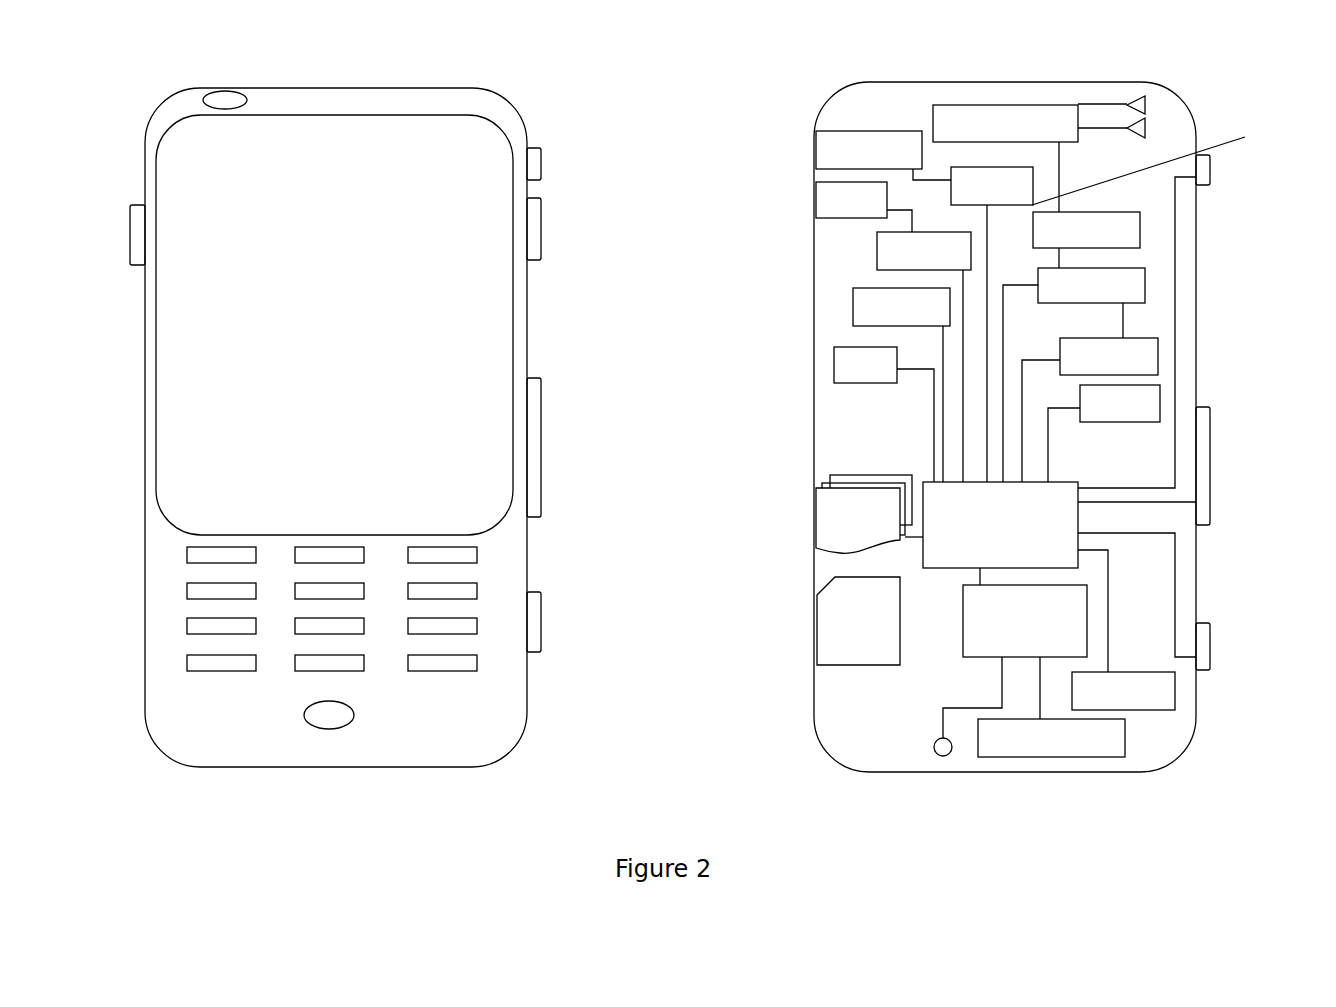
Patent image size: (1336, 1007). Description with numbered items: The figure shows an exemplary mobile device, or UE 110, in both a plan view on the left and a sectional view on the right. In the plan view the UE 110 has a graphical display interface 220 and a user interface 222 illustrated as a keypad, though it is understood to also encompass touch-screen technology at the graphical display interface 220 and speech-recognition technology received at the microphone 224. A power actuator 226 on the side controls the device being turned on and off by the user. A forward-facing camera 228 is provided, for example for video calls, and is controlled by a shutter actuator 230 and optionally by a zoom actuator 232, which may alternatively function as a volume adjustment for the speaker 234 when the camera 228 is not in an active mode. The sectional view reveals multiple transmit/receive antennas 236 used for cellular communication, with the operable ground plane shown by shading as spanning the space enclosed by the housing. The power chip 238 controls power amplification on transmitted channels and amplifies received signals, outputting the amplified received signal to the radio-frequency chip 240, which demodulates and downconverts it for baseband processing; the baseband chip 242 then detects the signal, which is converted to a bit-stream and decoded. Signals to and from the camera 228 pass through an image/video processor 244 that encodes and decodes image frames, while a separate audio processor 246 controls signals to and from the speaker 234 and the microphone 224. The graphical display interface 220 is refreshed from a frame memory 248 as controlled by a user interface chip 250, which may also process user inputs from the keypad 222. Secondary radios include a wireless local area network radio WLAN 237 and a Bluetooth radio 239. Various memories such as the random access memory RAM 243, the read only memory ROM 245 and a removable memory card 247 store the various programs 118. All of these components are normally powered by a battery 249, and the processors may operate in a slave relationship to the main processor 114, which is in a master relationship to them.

The UE 110 is at (122, 128).
The graphical display interface 220 is at (222, 303).
The user interface 222 is at (147, 590).
The microphone 224 is at (323, 722).
The power actuator 226 is at (542, 160).
The camera 228 is at (222, 90).
The shutter actuator 230 is at (542, 600).
The zoom actuator 232 is at (542, 400).
The speaker 234 is at (128, 197).
The transmit/receive antennas 236 is at (1143, 97).
The wireless local area network radio WLAN 237 is at (853, 307).
The power chip 238 is at (975, 105).
The Bluetooth radio 239 is at (834, 369).
The radio-frequency (RF) chip 240 is at (1140, 215).
The baseband (BB) chip 242 is at (1145, 272).
The random access memory RAM 243 is at (1158, 345).
The image/video processor 244 is at (1102, 303).
The read only memory ROM 245 is at (1160, 395).
The audio processor 246 is at (877, 255).
The memory card 247 is at (832, 603).
The frame memory 248 is at (1045, 757).
The battery 249 is at (1160, 710).
The user interface chip 250 is at (963, 627).
The main processor 114 is at (932, 482).
The programs 118 is at (828, 530).